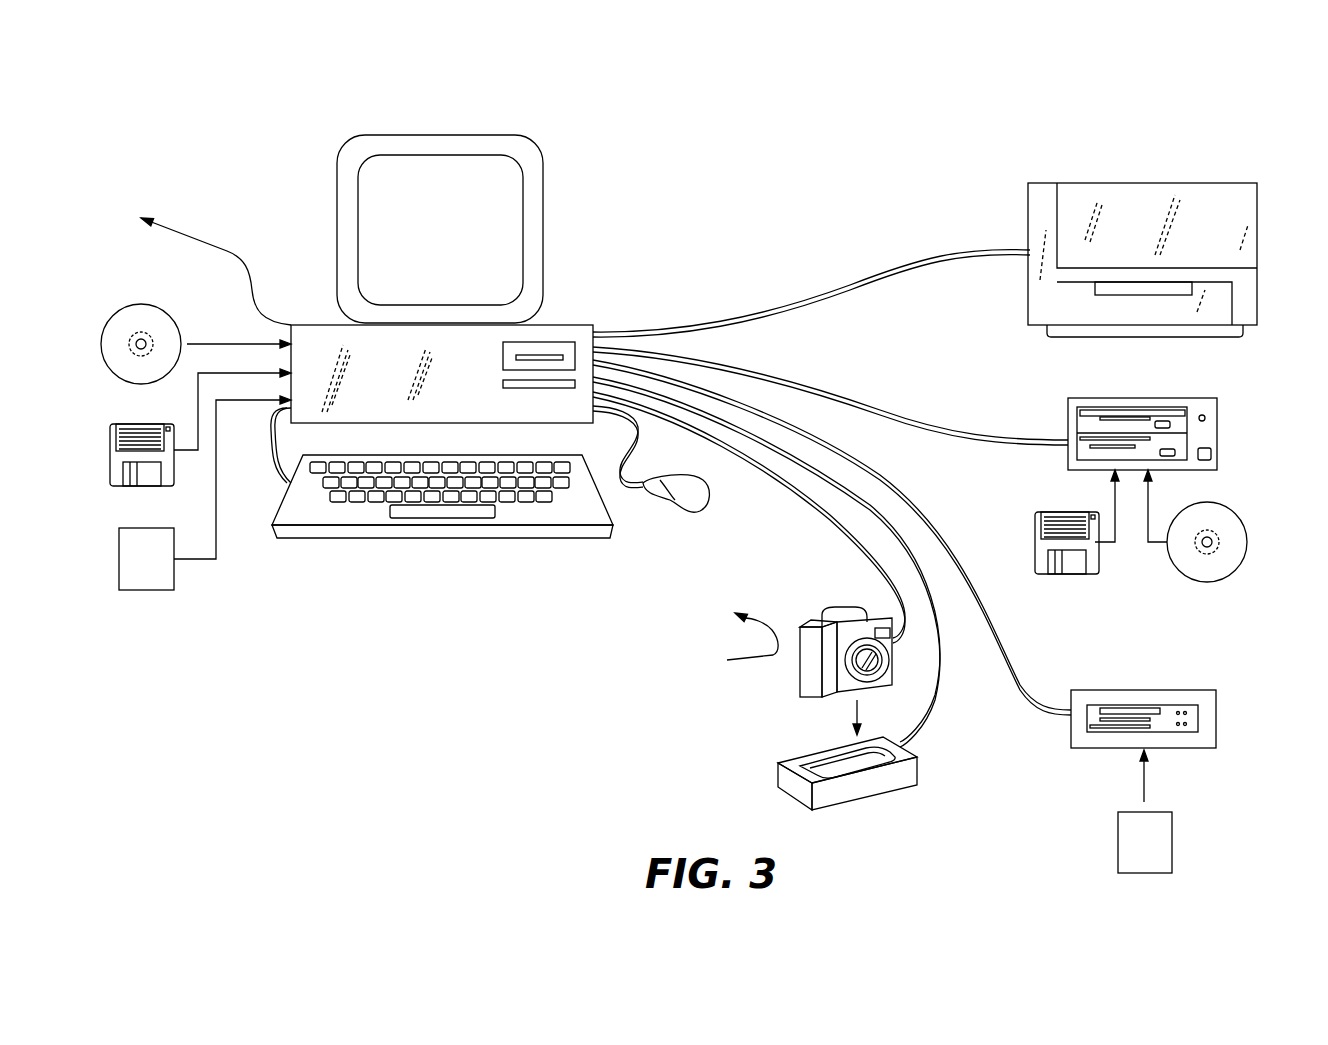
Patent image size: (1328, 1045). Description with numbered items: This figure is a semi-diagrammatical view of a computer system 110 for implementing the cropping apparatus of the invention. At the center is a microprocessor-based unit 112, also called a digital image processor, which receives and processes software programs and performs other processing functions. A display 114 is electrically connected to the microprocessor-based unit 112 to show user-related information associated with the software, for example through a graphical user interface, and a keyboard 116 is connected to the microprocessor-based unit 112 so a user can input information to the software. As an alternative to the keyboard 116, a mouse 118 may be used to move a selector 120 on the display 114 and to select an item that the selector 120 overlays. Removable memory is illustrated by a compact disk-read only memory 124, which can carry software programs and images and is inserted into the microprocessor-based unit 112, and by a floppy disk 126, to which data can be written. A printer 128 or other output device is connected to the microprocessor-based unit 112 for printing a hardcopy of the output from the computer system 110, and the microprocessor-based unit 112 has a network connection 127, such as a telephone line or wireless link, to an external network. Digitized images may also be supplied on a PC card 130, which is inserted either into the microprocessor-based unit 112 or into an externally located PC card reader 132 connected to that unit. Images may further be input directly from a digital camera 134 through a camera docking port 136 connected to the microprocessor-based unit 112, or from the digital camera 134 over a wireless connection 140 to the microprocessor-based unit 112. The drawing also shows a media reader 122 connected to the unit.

The computer system 110 is at (153, 148).
The microprocessor-based unit 112 is at (310, 340).
The display 114 is at (527, 158).
The keyboard 116 is at (350, 533).
The mouse 118 is at (668, 497).
The selector 120 is at (510, 240).
The media reader 122 is at (1208, 435).
The compact disk-read only memory (CD-ROM) 124 is at (143, 371).
The floppy disk 126 is at (145, 479).
The network connection 127 is at (207, 243).
The printer 128 is at (1223, 195).
The PC card 130 is at (145, 585).
The PC card reader 132 is at (1207, 720).
The digital camera 134 is at (830, 610).
The camera docking port 136 is at (787, 780).
The wireless connection 140 is at (729, 644).